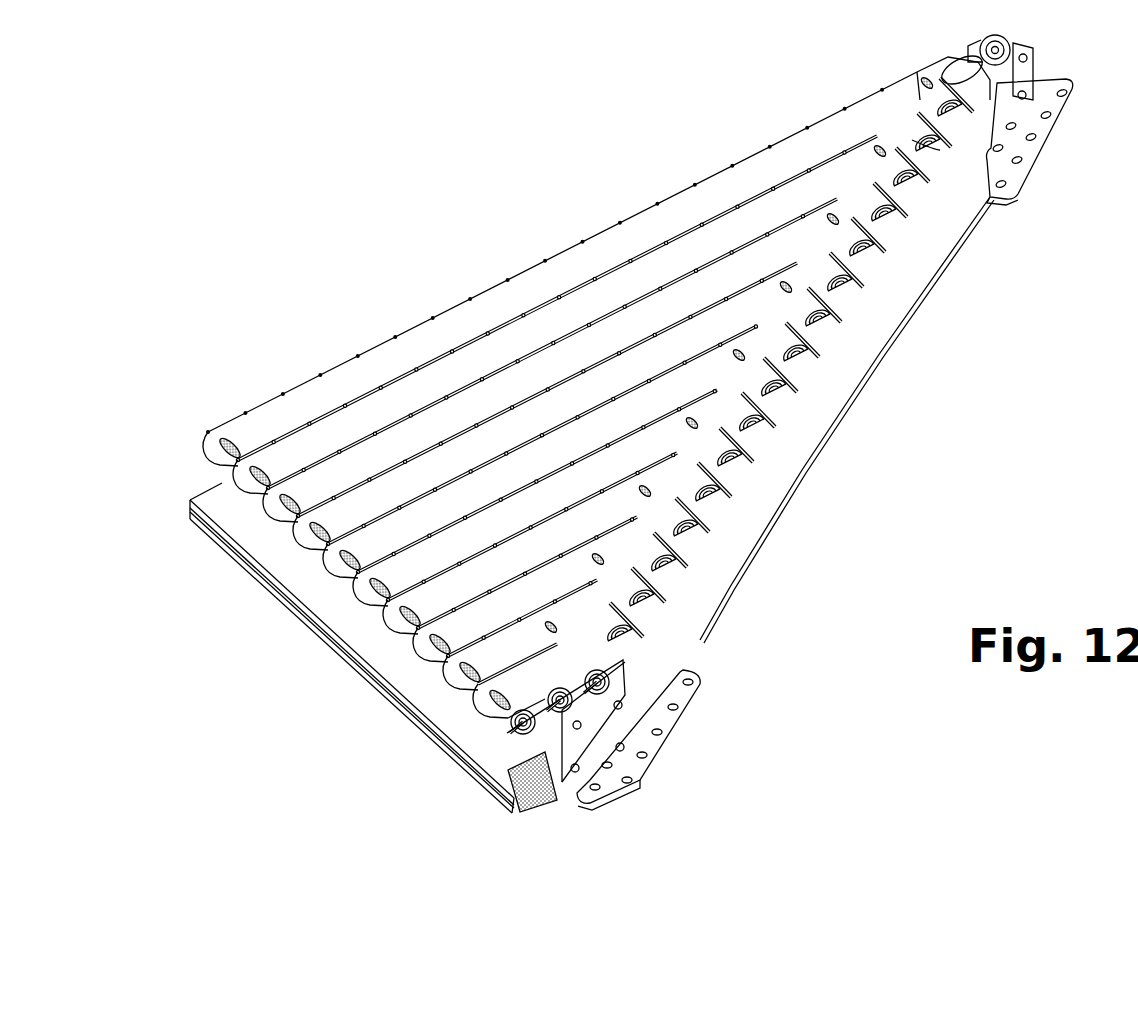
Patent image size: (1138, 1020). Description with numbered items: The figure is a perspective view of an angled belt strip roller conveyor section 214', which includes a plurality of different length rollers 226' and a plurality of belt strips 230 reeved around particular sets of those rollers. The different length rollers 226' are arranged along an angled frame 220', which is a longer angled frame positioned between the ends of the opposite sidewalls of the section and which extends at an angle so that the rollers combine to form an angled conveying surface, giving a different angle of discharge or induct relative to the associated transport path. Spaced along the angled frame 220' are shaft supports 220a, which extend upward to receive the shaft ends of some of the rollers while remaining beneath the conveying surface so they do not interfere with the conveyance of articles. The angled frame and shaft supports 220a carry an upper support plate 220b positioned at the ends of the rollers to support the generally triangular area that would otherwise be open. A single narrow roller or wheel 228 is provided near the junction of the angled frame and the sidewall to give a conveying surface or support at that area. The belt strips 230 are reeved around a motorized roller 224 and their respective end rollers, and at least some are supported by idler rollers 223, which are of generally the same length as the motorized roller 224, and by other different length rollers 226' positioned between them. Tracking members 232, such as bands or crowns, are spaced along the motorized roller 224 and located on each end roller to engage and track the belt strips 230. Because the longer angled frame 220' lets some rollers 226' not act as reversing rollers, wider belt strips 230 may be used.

The angled conveyor section 214' is at (982, 280).
The angled frame 220' is at (847, 420).
The shaft supports 220a is at (866, 276).
The upper support plate 220b is at (817, 340).
The idler rollers 223 is at (558, 712).
The motorized roller 224 is at (547, 760).
The different length rollers 226' is at (836, 410).
The narrow roller or wheel 228 is at (971, 43).
The belt strips 230 is at (350, 356).
The tracking members 232 is at (802, 472).